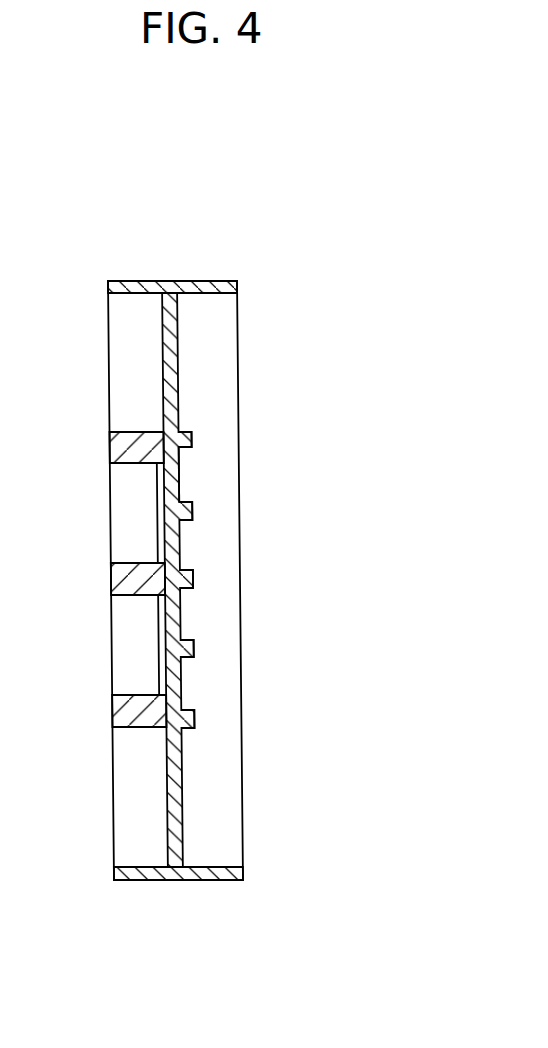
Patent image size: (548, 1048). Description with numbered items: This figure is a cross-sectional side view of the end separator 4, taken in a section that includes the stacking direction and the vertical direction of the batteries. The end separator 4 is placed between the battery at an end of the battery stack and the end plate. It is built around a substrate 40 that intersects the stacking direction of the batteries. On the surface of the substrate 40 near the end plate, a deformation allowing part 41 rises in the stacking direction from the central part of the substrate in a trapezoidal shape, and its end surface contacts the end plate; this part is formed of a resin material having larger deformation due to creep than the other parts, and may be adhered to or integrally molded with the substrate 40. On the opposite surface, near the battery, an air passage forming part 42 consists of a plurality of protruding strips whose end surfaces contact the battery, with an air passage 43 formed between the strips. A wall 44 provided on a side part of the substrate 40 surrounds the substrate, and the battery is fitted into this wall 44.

The end separator 4 is at (122, 273).
The substrate 40 is at (172, 312).
The deformation allowing part 41 is at (138, 432).
The air passage forming part 42 is at (193, 436).
The air passage 43 is at (187, 474).
The wall 44 is at (208, 281).